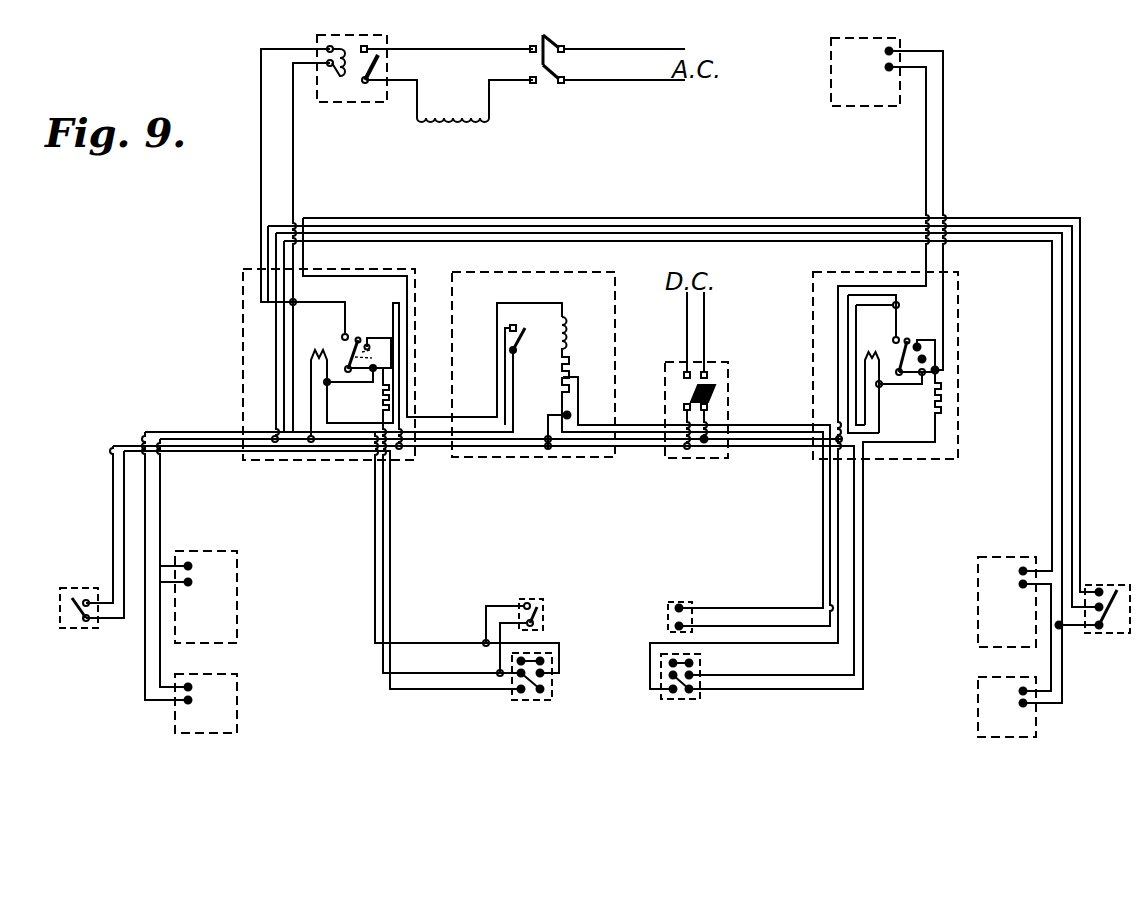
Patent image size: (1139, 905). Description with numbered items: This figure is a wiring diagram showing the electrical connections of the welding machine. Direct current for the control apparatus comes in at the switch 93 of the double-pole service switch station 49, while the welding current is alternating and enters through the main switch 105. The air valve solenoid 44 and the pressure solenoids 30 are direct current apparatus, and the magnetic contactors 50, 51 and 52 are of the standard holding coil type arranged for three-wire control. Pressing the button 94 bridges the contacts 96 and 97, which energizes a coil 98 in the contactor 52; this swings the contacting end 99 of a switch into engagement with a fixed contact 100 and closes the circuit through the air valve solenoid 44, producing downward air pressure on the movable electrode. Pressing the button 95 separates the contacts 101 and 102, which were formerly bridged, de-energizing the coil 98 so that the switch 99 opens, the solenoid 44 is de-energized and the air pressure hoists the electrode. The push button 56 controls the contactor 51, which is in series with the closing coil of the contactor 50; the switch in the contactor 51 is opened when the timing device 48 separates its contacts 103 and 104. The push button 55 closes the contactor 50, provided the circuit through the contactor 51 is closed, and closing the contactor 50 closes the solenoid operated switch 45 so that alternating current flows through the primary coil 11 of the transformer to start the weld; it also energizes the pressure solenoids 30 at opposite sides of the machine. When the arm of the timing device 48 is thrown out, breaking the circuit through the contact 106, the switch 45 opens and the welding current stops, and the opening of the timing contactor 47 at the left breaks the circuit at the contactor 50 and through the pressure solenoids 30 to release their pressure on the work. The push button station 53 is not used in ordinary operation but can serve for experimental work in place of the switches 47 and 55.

The primary windings 11 is at (450, 128).
The pressure solenoids 30 is at (237, 615).
The air valve solenoid 44 is at (798, 363).
The solenoid operated switch 45 is at (352, 102).
The timing contactor 47 is at (60, 610).
The timing contactor 48 is at (1096, 625).
The double-pole D. C. service switch 49 is at (720, 432).
The magnetic contactor 50 is at (300, 462).
The magnetic contactor 51 is at (548, 458).
The magnetic contactor 52 is at (852, 480).
The double push button station 53 is at (533, 700).
The single push button station 55 is at (533, 602).
The single push button station 56 is at (682, 605).
The switch 93 is at (712, 392).
The button 94 is at (677, 662).
The button 95 is at (679, 692).
The contact 96 is at (692, 677).
The contact 97 is at (671, 674).
The coil 98 is at (885, 354).
The contacting end of switch 99 is at (910, 340).
The fixed contact 100 is at (898, 335).
The contact 101 is at (670, 692).
The contact 102 is at (690, 692).
The contact 103 is at (1092, 590).
The contact 104 is at (1113, 590).
The main switch 105 is at (548, 85).
The contact 106 is at (1092, 615).